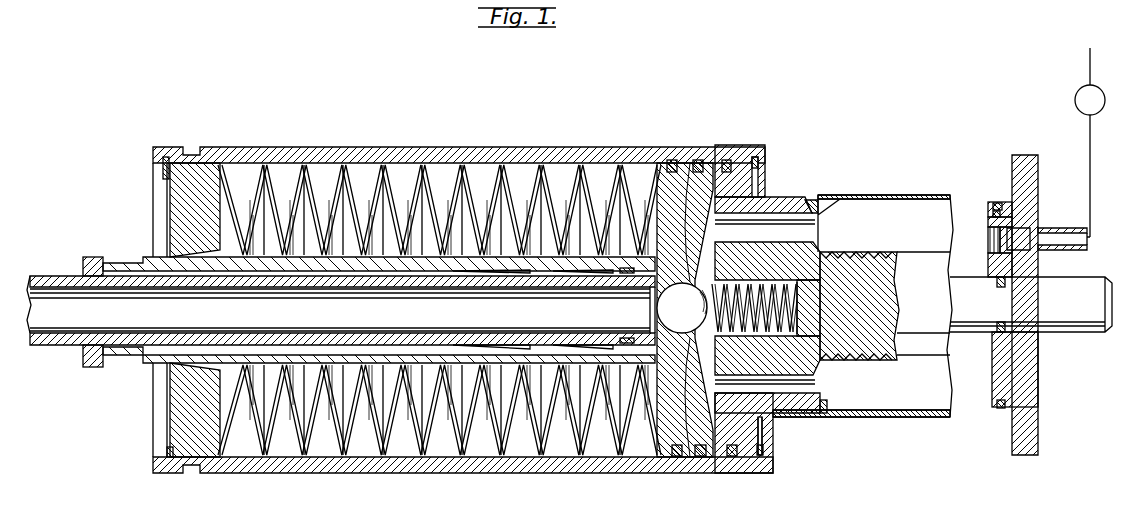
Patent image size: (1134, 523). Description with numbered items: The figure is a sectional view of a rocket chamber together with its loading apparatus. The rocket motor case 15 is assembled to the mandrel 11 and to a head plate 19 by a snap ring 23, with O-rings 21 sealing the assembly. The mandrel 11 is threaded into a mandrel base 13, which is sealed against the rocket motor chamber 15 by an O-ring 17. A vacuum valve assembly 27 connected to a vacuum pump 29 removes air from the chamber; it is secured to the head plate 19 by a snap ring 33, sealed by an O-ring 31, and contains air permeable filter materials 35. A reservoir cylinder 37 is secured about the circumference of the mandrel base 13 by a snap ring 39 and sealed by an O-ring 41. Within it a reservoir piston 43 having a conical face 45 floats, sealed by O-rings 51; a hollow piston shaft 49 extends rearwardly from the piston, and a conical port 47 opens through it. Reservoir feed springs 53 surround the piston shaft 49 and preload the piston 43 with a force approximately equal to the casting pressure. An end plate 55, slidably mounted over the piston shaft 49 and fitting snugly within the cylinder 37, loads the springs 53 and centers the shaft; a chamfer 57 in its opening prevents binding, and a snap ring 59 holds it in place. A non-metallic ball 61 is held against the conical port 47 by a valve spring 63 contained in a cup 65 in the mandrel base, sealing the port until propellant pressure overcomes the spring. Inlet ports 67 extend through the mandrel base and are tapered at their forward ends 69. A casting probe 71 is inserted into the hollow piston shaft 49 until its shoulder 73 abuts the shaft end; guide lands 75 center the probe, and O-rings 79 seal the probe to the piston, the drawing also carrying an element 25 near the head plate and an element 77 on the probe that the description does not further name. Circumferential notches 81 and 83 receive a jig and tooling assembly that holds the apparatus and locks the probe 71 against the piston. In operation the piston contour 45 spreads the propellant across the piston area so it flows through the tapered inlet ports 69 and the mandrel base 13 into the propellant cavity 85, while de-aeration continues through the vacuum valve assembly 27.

The mandrel 11 is at (1098, 332).
The mandrel base 13 is at (850, 270).
The rocket motor case 15 is at (862, 196).
The O-ring 17 is at (808, 200).
The head plate 19 is at (1040, 180).
The O-rings 21 is at (998, 202).
The snap ring 23 is at (1040, 332).
The bushing block 25 is at (992, 336).
The vacuum valve assembly 27 is at (1084, 249).
The vacuum pump 29 is at (1075, 100).
The O-ring 31 is at (990, 212).
The snap ring 33 is at (1042, 227).
The air permeable filter materials 35 is at (988, 242).
The reservoir cylinder 37 is at (723, 147).
The snap ring 39 is at (773, 460).
The O-ring 41 is at (732, 456).
The reservoir piston 43 is at (671, 160).
The conical face 45 is at (720, 213).
The conical port 47 is at (665, 457).
The hollow piston shaft 49 is at (150, 258).
The O-rings 51 is at (700, 456).
The reservoir feed springs 53 is at (548, 165).
The end plate 55 is at (200, 150).
The chamfer 57 is at (190, 370).
The snap ring 59 is at (167, 452).
The ball 61 is at (688, 316).
The valve spring 63 is at (798, 320).
The cup 65 is at (858, 362).
The inlet ports 67 is at (796, 414).
The tapered forward ends 69 is at (824, 413).
The casting probe 71 is at (42, 276).
The shoulder 73 is at (95, 258).
The guide lands 75 is at (458, 347).
The key 77 is at (612, 342).
The O-rings 79 is at (628, 338).
The circumferential notch 81 is at (130, 366).
The circumferential notch 83 is at (192, 473).
The propellant cavity 85 is at (905, 215).